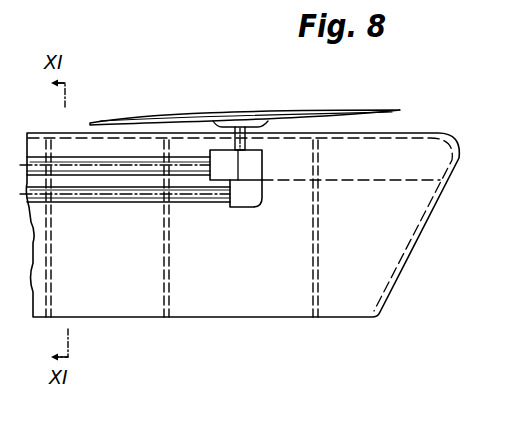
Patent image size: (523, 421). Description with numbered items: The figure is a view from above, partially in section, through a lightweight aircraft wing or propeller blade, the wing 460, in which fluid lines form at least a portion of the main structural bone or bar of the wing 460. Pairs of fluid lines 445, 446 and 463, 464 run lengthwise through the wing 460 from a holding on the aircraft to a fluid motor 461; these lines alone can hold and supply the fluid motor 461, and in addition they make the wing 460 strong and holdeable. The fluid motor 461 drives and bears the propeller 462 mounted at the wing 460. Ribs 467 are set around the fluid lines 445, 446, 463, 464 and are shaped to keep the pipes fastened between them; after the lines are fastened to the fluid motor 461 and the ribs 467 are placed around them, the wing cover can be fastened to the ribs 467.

The fluid line 445 is at (83, 173).
The fluid line 446 is at (115, 120).
The wing 460 is at (224, 308).
The fluid motor 461 is at (253, 158).
The propeller 462 is at (229, 119).
The fluid line 463 is at (103, 192).
The fluid line 464 is at (125, 221).
The ribs 467 is at (50, 296).